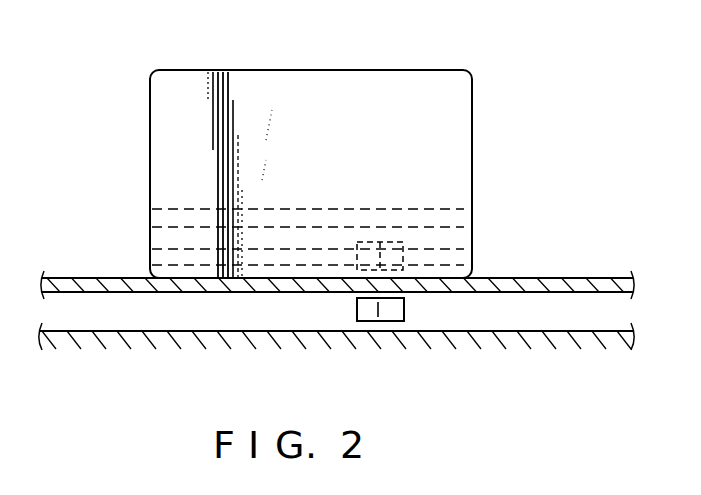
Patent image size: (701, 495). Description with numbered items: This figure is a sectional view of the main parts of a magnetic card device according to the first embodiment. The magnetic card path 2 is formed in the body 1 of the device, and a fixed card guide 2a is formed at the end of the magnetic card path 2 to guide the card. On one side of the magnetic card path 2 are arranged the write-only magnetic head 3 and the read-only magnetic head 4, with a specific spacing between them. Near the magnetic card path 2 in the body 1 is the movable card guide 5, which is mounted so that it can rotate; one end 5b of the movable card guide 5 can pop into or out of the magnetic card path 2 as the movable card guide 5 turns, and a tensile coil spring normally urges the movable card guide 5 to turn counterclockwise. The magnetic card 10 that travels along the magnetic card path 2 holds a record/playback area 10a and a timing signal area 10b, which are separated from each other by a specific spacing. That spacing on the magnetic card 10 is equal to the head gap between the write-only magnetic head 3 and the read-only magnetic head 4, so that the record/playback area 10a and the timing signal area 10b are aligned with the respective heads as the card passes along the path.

The body 1 is at (461, 384).
The magnetic card path 2 is at (520, 72).
The fixed card guide 2a is at (80, 322).
The write-only magnetic head 3 is at (371, 322).
The read-only magnetic head 4 is at (403, 248).
The movable card guide 5 is at (590, 270).
The one end of movable card guide 5b is at (541, 283).
The magnetic card 10 is at (324, 78).
The record/playback area 10a is at (150, 257).
The timing signal area 10b is at (150, 210).